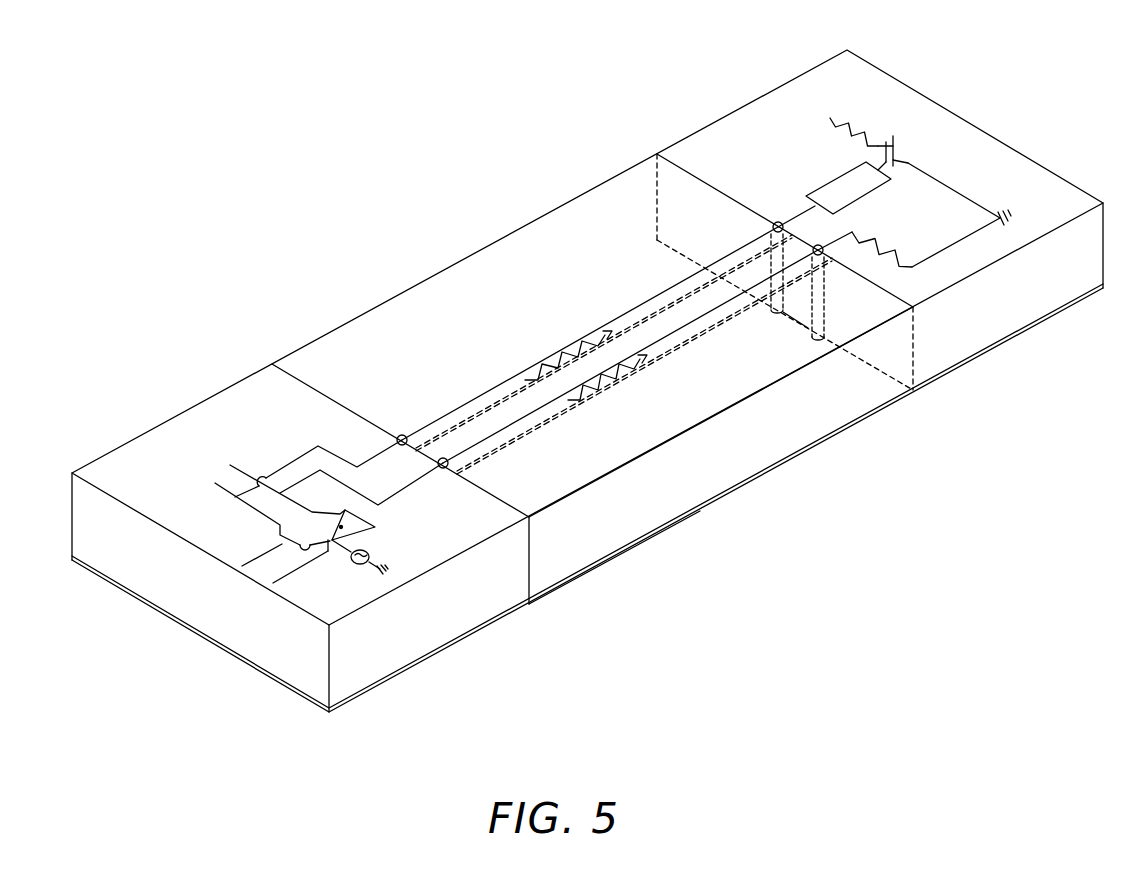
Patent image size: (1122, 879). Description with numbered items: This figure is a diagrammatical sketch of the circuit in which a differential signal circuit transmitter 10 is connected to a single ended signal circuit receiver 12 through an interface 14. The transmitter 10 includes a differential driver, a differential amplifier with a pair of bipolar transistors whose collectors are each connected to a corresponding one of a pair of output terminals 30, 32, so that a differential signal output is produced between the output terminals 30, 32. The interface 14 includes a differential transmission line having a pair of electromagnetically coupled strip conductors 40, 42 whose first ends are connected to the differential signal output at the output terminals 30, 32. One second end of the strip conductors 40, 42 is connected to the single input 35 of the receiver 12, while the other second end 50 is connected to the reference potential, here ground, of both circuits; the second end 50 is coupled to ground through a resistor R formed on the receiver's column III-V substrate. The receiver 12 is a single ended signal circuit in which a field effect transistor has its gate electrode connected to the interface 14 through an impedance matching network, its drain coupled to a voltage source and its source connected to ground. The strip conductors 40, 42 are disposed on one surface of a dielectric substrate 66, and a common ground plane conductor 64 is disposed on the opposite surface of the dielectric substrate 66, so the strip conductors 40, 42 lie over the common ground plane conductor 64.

The differential signal circuit transmitter 10 is at (218, 393).
The single ended signal circuit receiver 12 is at (750, 108).
The interface 14 is at (477, 253).
The output terminal 30 is at (404, 433).
The output terminal 32 is at (403, 653).
The single input 35 is at (777, 221).
The strip conductor 40 is at (493, 388).
The strip conductor 42 is at (530, 417).
The second end 50 is at (816, 245).
The common ground plane conductor 64 is at (793, 470).
The dielectric substrate 66 is at (690, 468).